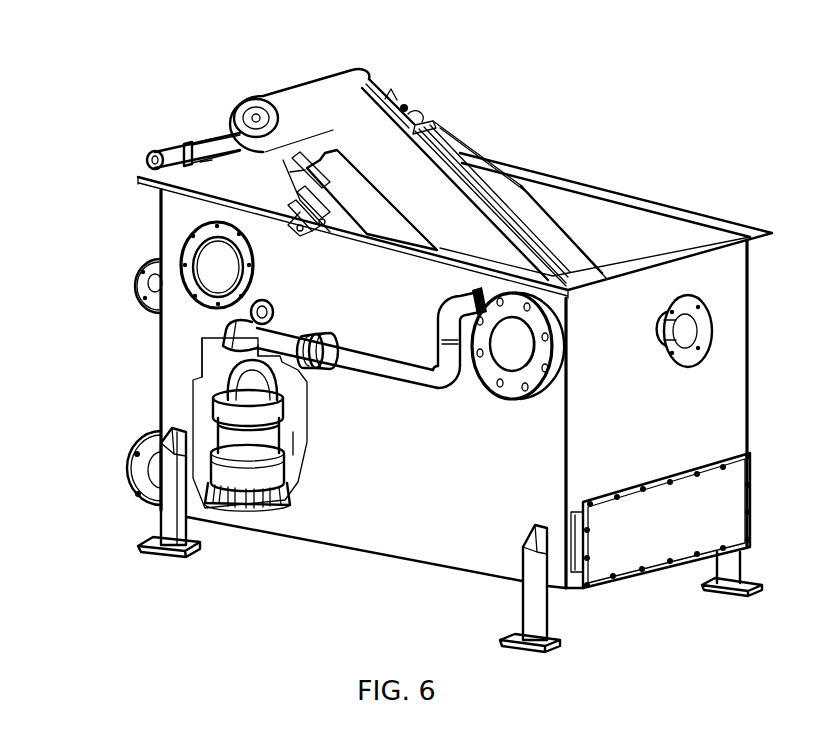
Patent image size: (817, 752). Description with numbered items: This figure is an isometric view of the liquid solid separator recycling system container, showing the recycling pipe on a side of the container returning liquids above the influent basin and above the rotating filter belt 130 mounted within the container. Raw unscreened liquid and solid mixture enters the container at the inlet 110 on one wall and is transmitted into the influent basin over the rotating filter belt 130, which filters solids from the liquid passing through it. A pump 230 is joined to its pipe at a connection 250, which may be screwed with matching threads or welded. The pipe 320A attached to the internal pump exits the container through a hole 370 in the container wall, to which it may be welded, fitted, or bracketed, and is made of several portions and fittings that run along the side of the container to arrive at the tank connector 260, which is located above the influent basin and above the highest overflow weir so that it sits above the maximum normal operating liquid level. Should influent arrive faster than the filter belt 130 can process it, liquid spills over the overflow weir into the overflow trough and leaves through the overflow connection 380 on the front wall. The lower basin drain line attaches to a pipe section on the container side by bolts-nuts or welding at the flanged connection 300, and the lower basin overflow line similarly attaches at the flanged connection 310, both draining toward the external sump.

The rotating filter belt 130 is at (293, 83).
The tank connector 260 is at (490, 290).
The lower basin overflow line connection 310 is at (143, 265).
The hole 370 is at (273, 305).
The lower basin drain line connection 300 is at (123, 460).
The connection 250 is at (286, 442).
The pipe 320A is at (378, 370).
The pump 230 is at (267, 510).
The overflow connection 380 is at (510, 400).
The inlet 110 is at (713, 340).